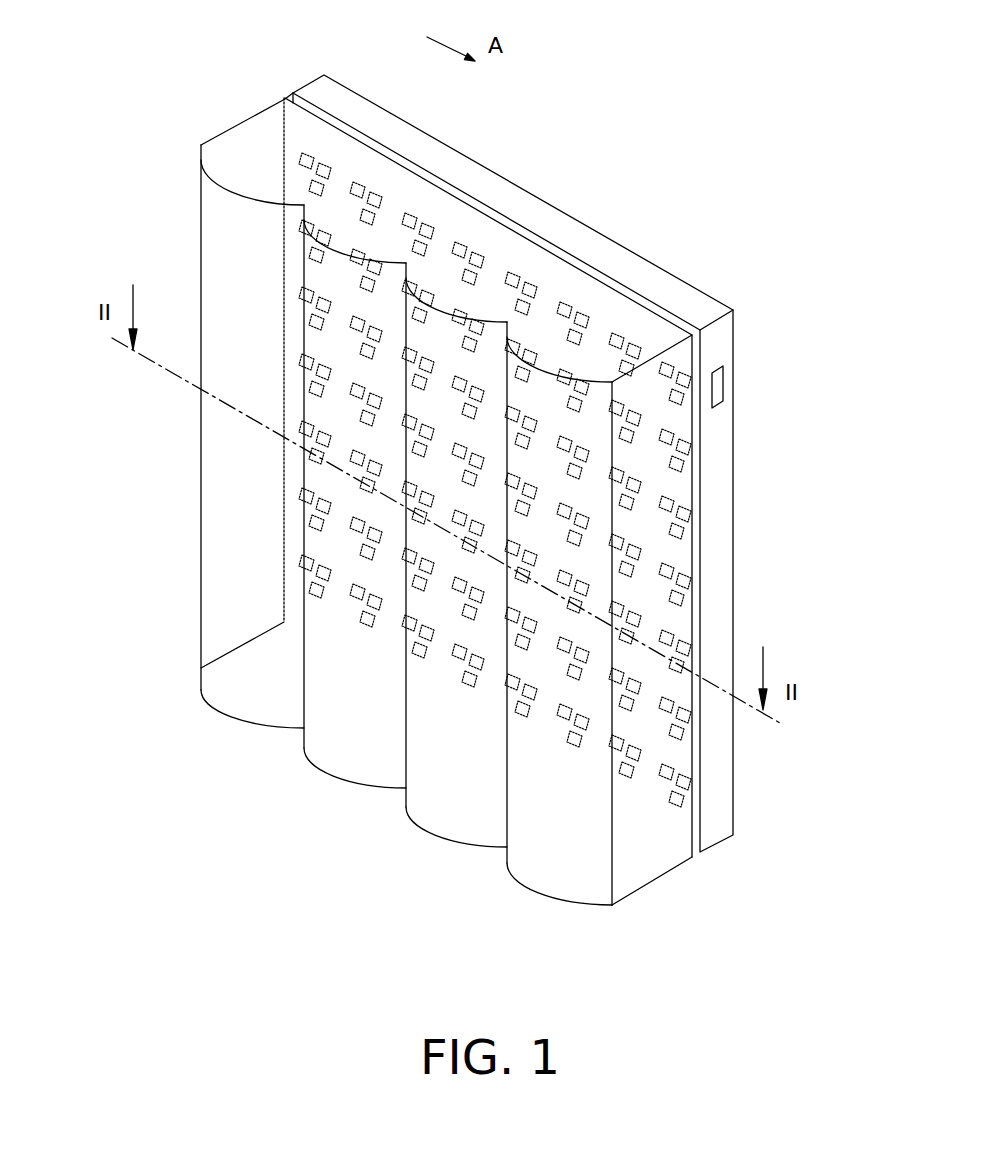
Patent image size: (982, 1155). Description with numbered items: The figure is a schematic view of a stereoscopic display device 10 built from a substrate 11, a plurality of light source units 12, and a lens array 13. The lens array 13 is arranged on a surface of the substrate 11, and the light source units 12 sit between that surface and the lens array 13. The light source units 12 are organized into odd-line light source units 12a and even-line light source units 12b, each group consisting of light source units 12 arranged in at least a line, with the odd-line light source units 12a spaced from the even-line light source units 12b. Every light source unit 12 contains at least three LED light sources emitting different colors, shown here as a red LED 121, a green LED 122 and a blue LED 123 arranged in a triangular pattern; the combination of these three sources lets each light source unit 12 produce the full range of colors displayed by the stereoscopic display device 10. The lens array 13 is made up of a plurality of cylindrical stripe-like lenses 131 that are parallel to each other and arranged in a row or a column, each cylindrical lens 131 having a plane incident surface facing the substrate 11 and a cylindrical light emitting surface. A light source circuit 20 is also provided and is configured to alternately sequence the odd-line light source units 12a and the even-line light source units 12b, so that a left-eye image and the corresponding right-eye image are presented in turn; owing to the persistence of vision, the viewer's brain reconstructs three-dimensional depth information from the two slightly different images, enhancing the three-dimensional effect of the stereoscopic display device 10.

The stereoscopic display device 10 is at (662, 112).
The substrate 11 is at (716, 310).
The light source unit 12 is at (800, 488).
The odd-line light source units 12a is at (305, 157).
The even-line light source units 12b is at (573, 441).
The red LED 121 is at (674, 527).
The green LED 122 is at (668, 494).
The blue LED 123 is at (680, 507).
The lens array 13 is at (548, 962).
The cylindrical stripe-like lens 131 is at (265, 703).
The light source circuit 20 is at (724, 384).